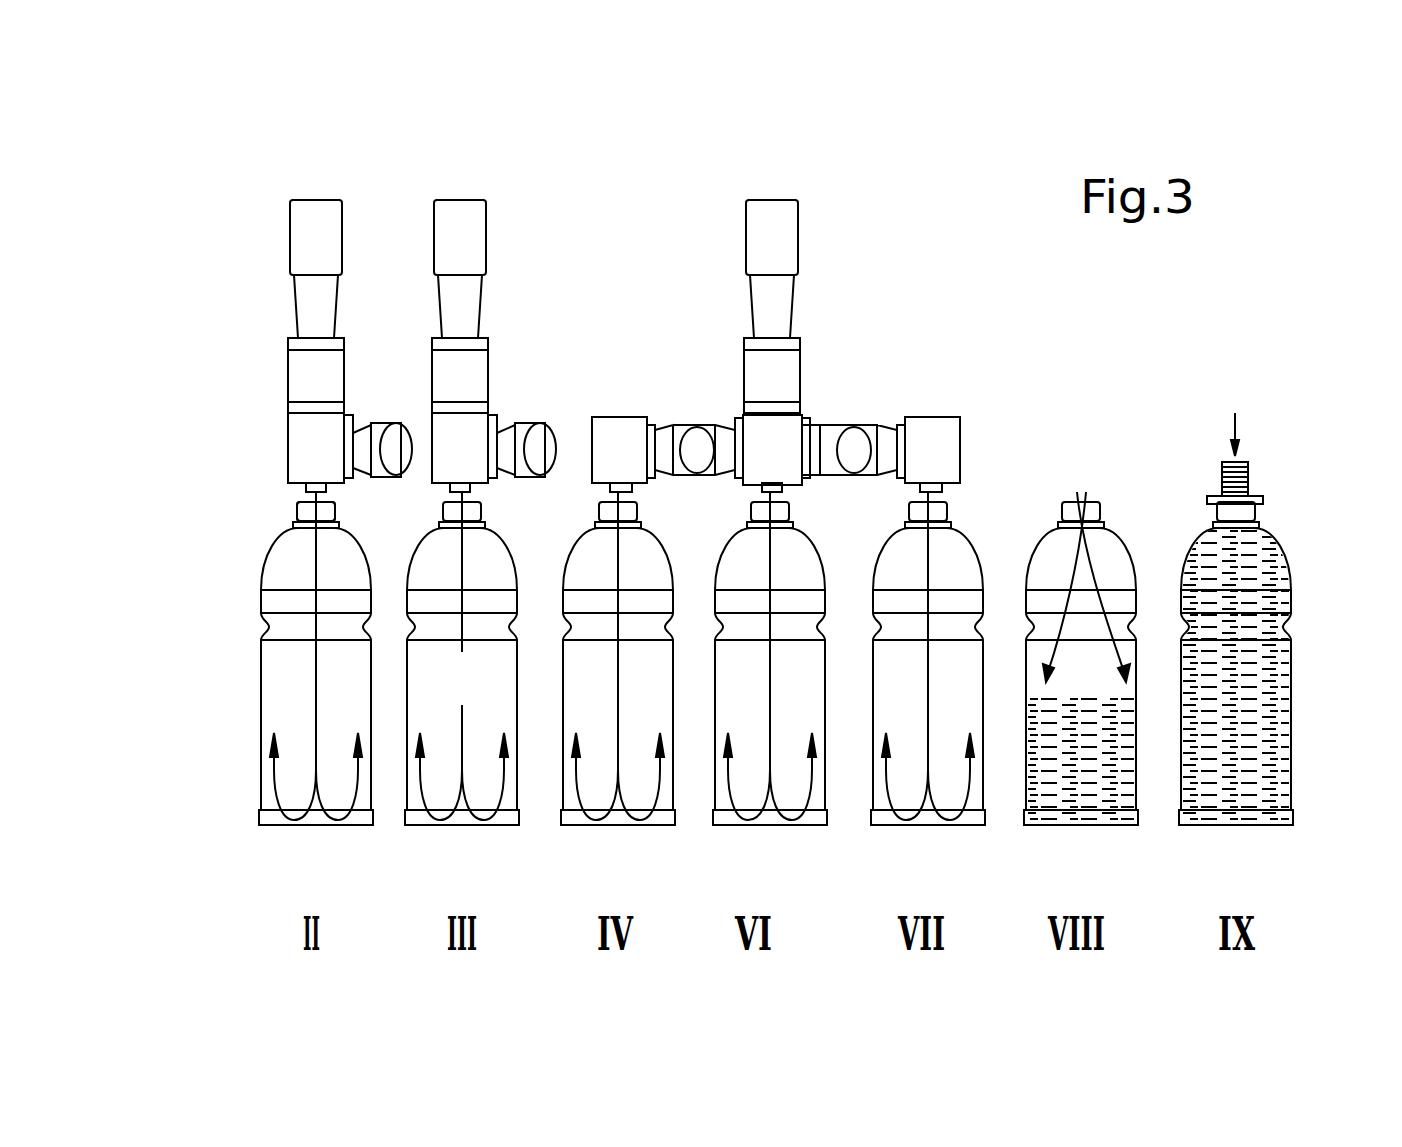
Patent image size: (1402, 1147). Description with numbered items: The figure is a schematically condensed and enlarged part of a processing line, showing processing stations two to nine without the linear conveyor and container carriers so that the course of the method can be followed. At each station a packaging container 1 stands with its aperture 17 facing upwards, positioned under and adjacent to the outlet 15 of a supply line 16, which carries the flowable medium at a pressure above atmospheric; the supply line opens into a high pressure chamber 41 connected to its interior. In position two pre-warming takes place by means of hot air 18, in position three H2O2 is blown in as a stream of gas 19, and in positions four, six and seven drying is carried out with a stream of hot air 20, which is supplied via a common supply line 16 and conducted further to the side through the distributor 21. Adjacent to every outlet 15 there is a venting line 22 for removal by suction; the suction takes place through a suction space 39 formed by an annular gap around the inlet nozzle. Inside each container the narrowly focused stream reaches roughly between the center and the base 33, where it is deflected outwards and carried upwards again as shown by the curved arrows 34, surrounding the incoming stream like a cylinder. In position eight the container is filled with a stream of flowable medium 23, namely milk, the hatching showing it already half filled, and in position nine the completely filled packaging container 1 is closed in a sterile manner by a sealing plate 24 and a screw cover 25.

The packaging container 1 is at (273, 712).
The outlet 15 is at (290, 495).
The supply line 16 is at (322, 241).
The aperture 17 is at (300, 510).
The hot air 18 is at (312, 662).
The stream of gas 19 is at (465, 572).
The stream of hot air 20 is at (622, 572).
The distributor 21 is at (752, 427).
The venting line 22 is at (395, 445).
The stream of flowable medium 23 is at (1107, 520).
The sealing plate 24 is at (1258, 500).
The screw cover 25 is at (1245, 460).
The base 33 is at (315, 826).
The curved arrows 34 is at (275, 775).
The suction space 39 is at (318, 440).
The high pressure chamber 41 is at (314, 372).